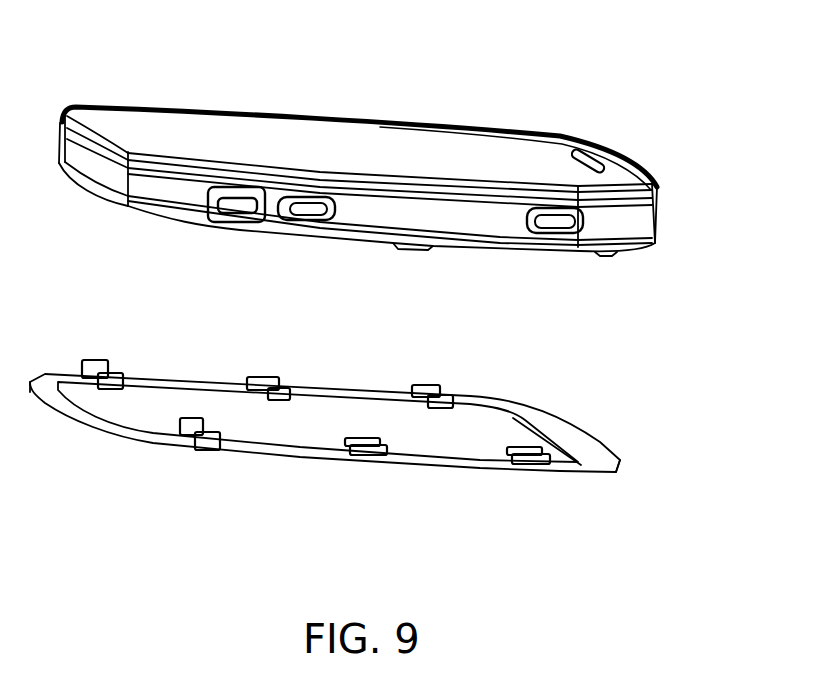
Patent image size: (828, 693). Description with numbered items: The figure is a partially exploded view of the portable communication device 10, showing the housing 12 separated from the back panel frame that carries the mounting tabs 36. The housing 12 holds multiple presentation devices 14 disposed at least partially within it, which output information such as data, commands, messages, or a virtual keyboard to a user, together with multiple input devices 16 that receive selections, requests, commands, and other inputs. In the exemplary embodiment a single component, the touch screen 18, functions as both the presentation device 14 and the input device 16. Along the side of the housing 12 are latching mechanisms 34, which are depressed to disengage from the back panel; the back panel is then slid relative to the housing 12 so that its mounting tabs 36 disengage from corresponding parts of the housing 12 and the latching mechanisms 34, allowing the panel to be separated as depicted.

The portable communication device 10 is at (640, 130).
The housing 12 is at (620, 230).
The presentation device 14 is at (402, 147).
The input device 16 is at (325, 145).
The touch screen 18 is at (222, 132).
The latching mechanism 34 is at (240, 207).
The mounting tab 36 is at (97, 360).